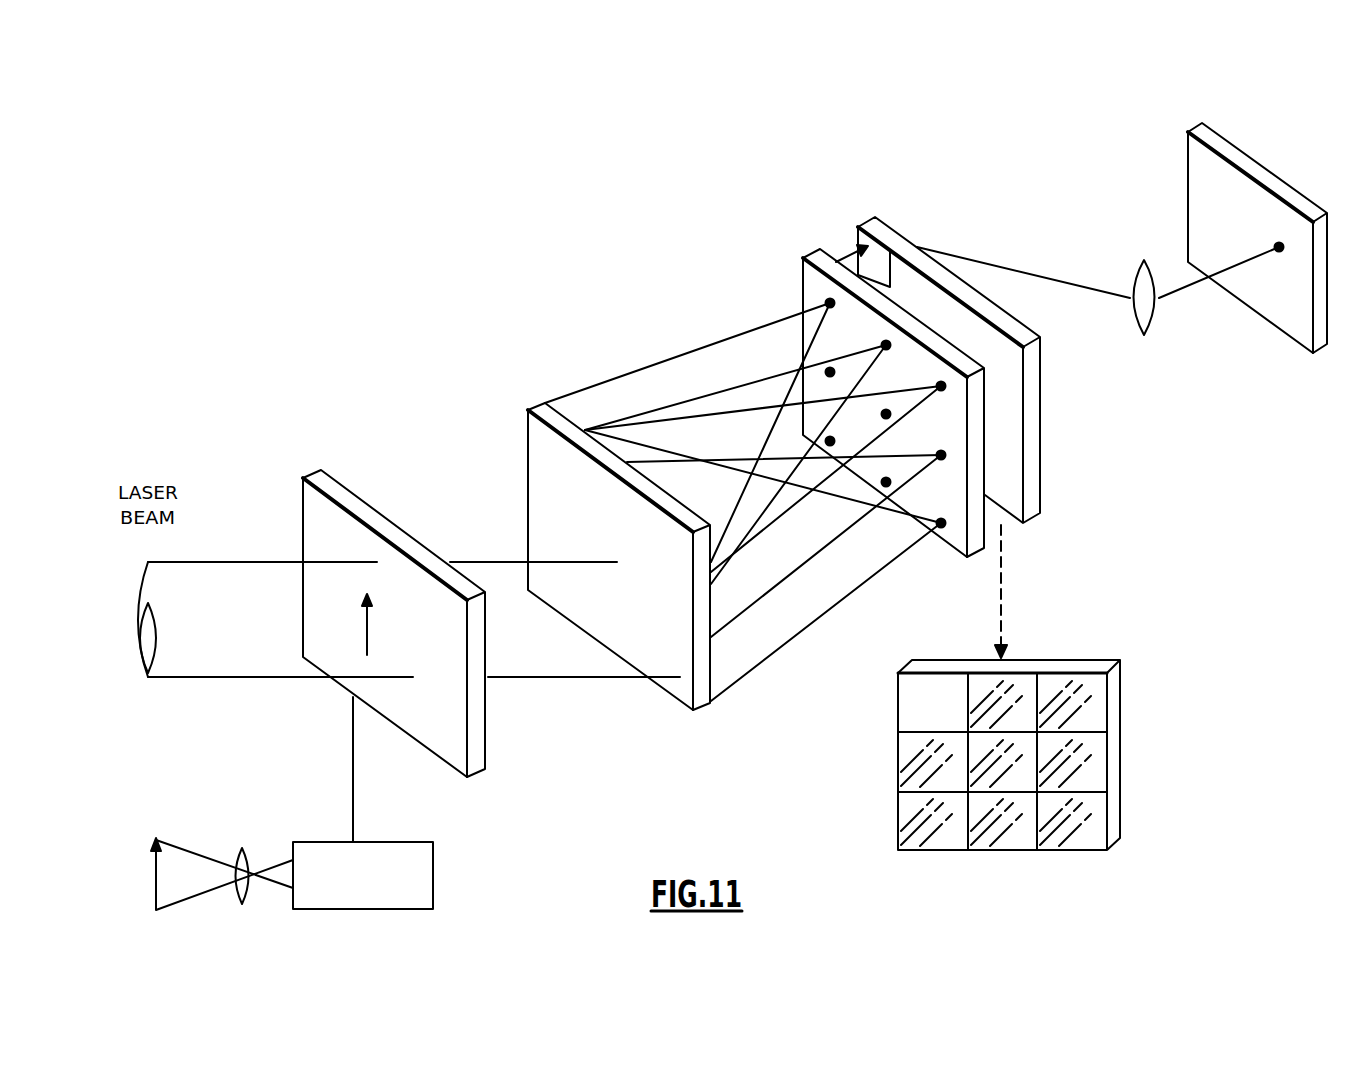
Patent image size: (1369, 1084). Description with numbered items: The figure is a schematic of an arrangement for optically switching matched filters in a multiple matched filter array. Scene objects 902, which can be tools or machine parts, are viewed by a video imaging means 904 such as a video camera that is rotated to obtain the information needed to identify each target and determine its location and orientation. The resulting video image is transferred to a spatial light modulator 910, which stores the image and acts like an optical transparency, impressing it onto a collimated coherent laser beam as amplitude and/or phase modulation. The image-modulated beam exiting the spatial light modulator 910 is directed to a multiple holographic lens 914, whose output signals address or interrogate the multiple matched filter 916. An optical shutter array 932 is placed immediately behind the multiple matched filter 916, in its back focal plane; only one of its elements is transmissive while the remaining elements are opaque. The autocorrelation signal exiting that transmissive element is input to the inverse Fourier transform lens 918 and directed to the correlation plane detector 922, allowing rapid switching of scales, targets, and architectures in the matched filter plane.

The scene objects 902 is at (153, 847).
The video imaging means 904 is at (343, 910).
The spatial light modulator 910 is at (313, 473).
The multiple holographic lens 914 is at (542, 408).
The multiple matched filter 916 is at (813, 252).
The inverse Fourier transform lens 918 is at (1145, 262).
The correlation plane detector 922 is at (1197, 127).
The optical shutter array 932 is at (873, 218).